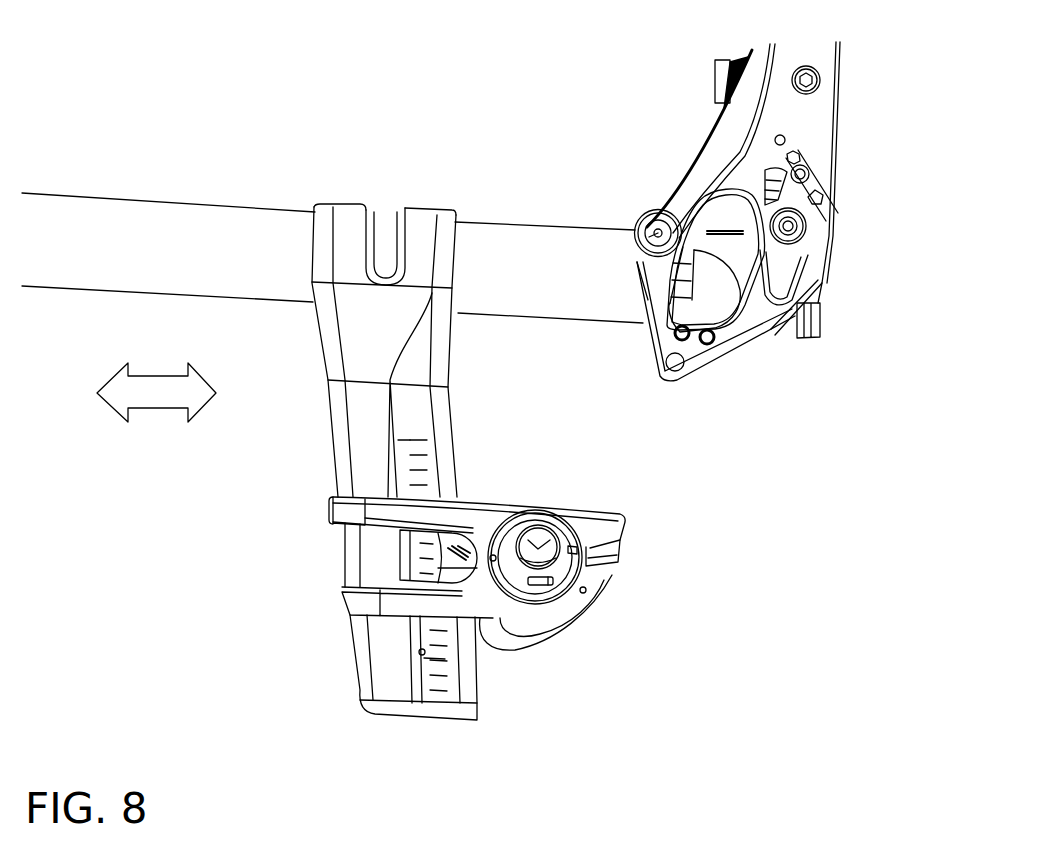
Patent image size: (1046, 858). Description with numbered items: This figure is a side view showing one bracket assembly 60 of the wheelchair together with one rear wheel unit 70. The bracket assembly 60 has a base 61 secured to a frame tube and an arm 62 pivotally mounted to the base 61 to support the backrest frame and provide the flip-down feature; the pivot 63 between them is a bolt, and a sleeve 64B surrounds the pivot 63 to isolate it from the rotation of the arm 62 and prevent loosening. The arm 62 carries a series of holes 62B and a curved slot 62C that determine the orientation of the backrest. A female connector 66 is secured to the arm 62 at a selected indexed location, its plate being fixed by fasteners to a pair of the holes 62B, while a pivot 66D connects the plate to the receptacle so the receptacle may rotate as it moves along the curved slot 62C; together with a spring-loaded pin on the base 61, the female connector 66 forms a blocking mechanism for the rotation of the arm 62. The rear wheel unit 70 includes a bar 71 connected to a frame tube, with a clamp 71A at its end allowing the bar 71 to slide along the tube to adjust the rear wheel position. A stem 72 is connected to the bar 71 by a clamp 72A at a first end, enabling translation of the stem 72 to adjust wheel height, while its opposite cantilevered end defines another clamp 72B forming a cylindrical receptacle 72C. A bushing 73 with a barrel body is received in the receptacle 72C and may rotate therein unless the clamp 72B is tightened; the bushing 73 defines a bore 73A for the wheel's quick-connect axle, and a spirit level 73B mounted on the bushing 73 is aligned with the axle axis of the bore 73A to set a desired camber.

The bracket assembly 60 is at (667, 168).
The base 61 is at (736, 124).
The arm 62 is at (723, 343).
The series of holes 62B is at (790, 160).
The slot 62C is at (785, 298).
The pivot 63 is at (636, 230).
The sleeve 64B is at (636, 250).
The female connector 66 is at (817, 238).
The pivot 66D is at (827, 233).
The rear wheel unit 70 is at (327, 631).
The bar 71 is at (345, 667).
The clamp 71A is at (470, 135).
The stem 72 is at (477, 512).
The clamp 72A is at (345, 590).
The clamp 72B is at (618, 571).
The cylindrical receptacle 72C is at (573, 543).
The bushing 73 is at (517, 580).
The bore 73A is at (540, 533).
The spirit level 73B is at (542, 585).